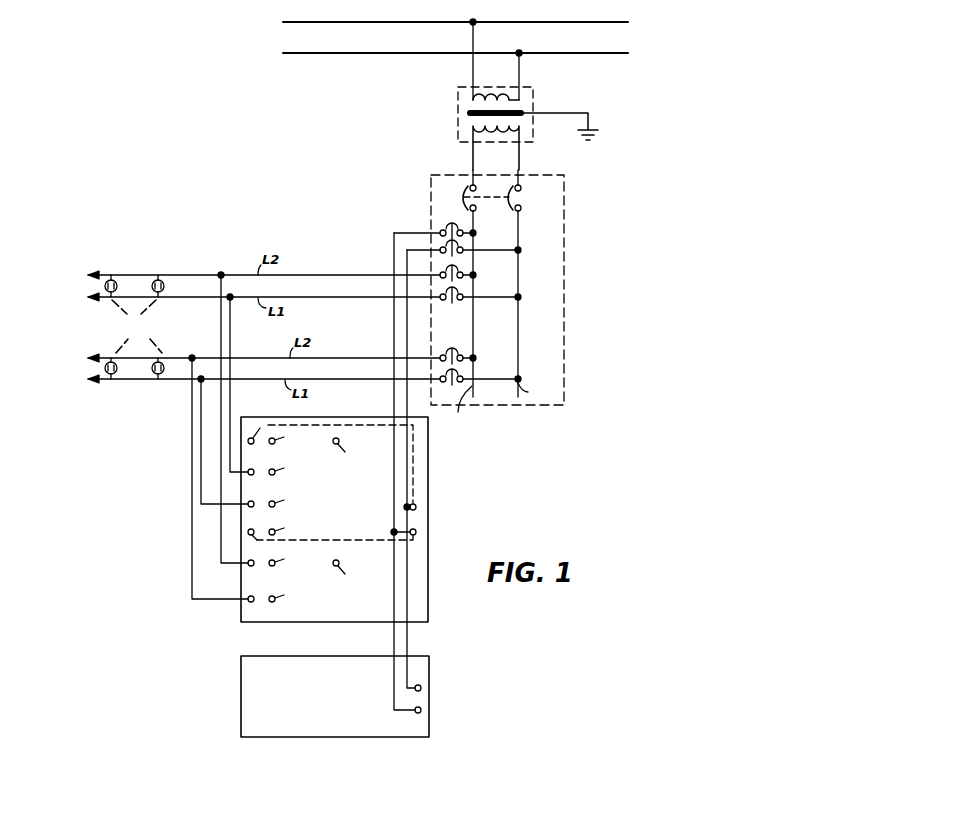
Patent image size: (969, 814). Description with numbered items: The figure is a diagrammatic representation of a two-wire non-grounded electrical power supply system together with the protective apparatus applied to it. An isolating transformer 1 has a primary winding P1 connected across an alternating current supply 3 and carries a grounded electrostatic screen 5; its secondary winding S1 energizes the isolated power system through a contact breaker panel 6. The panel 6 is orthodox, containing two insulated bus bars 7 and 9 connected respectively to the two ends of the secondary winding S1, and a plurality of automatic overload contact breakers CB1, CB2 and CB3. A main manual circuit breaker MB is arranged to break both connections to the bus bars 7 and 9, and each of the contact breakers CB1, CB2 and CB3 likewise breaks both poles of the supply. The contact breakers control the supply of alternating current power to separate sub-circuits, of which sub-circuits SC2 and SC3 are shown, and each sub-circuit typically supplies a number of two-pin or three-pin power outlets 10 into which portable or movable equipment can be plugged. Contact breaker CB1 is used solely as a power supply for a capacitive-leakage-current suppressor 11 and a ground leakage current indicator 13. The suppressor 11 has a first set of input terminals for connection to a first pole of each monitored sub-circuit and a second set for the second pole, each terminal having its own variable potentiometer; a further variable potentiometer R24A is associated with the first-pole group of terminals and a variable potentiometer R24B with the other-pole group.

The isolating transformer 1 is at (503, 118).
The alternating current supply 3 is at (278, 18).
The grounded electrostatic screen 5 is at (466, 115).
The contact breaker panel 6 is at (500, 298).
The insulated bus bar 7 is at (474, 333).
The insulated bus bar 9 is at (518, 359).
The power outlets 10 is at (137, 326).
The capacitive-leakage-current suppressor 11 is at (358, 519).
The ground leakage current indicator 13 is at (431, 670).
The primary winding P1 is at (526, 93).
The secondary winding S1 is at (474, 134).
The main manual circuit breaker MB is at (460, 197).
The automatic overload contact breaker CB1 is at (420, 223).
The automatic overload contact breaker CB2 is at (463, 273).
The automatic overload contact breaker CB3 is at (449, 352).
The sub-circuit SC2 is at (79, 270).
The sub-circuit SC3 is at (87, 352).
The variable potentiometer R24A is at (354, 451).
The variable potentiometer R24B is at (353, 573).